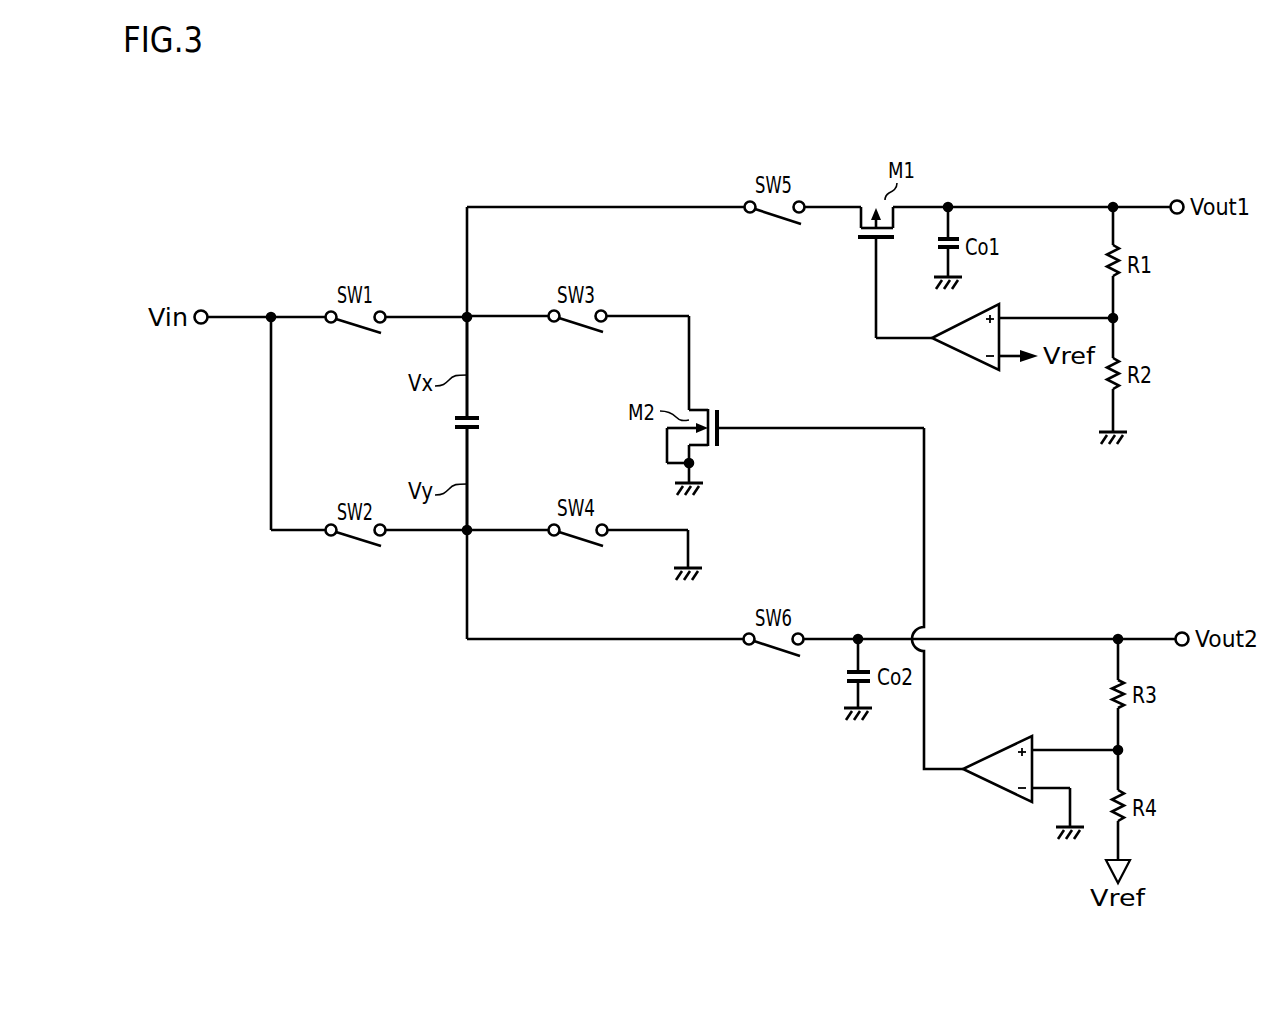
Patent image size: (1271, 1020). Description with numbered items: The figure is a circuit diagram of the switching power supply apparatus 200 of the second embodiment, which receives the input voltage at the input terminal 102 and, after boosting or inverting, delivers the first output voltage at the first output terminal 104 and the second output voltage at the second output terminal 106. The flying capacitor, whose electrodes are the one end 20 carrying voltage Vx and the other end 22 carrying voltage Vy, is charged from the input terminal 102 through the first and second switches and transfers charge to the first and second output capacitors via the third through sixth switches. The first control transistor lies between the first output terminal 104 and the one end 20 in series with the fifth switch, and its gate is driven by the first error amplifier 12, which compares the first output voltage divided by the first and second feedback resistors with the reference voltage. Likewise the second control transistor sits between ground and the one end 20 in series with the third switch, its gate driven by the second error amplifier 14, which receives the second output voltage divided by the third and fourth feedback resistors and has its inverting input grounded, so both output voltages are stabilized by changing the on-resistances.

The input terminal 102 is at (205, 308).
The first output terminal 104 is at (1171, 200).
The second output terminal 106 is at (1179, 632).
The one end of the flying capacitor 20 is at (467, 354).
The other end of the flying capacitor 22 is at (467, 462).
The first error amplifier 12 is at (963, 358).
The second error amplifier 14 is at (1000, 753).
The switching power supply apparatus 200 is at (717, 941).